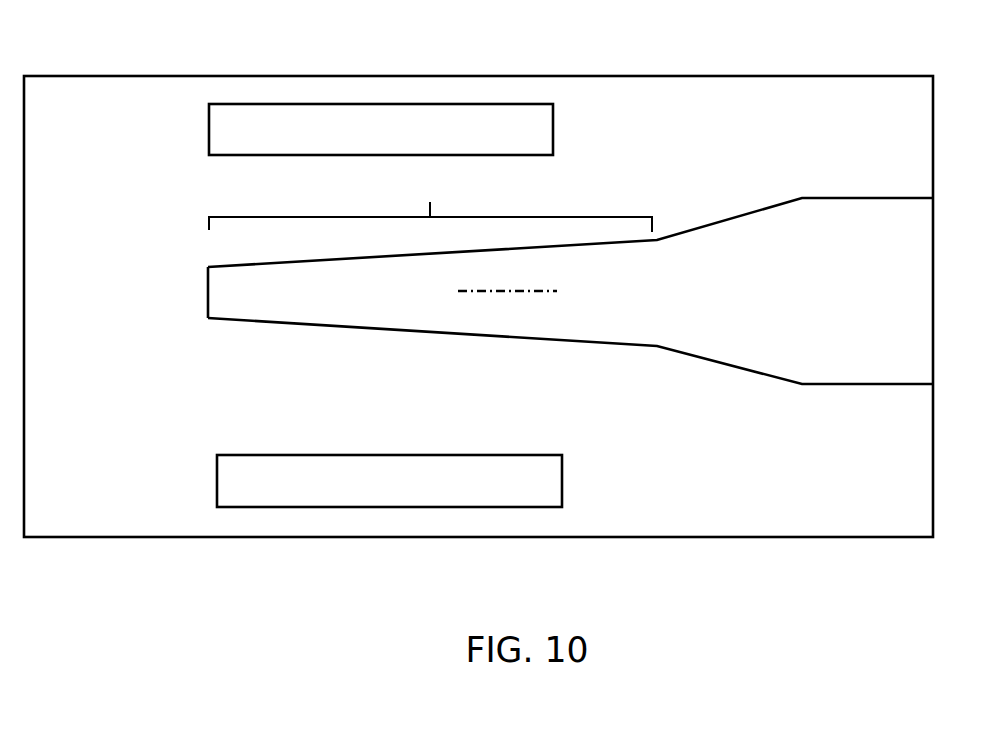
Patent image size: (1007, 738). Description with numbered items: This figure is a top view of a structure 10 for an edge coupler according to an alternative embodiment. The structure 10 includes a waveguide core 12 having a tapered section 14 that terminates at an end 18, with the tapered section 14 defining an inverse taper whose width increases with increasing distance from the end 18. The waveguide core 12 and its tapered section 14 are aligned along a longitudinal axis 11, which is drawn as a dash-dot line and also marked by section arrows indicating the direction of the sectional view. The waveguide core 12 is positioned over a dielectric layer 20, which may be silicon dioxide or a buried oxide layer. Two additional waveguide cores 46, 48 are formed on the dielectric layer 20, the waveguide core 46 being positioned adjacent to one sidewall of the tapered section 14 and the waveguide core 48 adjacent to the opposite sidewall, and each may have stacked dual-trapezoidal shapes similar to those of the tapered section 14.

The structure 10 is at (110, 55).
The longitudinal axis 11 is at (403, 34).
The waveguide core 12 is at (383, 310).
The tapered section 14 is at (430, 200).
The end 18 is at (208, 290).
The dielectric layer 20 is at (848, 462).
The waveguide core 46 is at (522, 132).
The waveguide core 48 is at (530, 492).